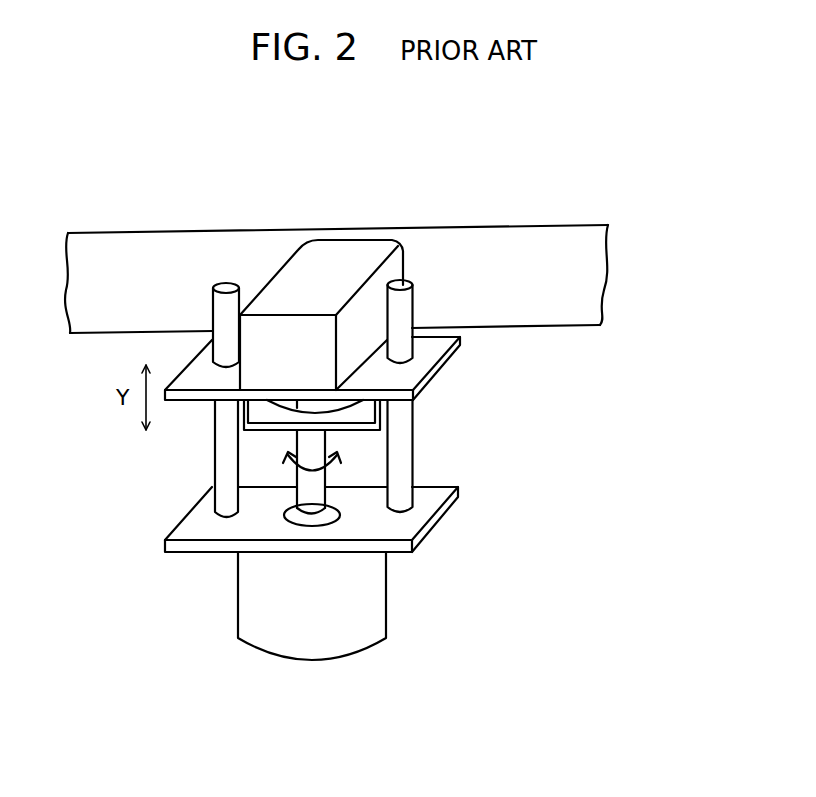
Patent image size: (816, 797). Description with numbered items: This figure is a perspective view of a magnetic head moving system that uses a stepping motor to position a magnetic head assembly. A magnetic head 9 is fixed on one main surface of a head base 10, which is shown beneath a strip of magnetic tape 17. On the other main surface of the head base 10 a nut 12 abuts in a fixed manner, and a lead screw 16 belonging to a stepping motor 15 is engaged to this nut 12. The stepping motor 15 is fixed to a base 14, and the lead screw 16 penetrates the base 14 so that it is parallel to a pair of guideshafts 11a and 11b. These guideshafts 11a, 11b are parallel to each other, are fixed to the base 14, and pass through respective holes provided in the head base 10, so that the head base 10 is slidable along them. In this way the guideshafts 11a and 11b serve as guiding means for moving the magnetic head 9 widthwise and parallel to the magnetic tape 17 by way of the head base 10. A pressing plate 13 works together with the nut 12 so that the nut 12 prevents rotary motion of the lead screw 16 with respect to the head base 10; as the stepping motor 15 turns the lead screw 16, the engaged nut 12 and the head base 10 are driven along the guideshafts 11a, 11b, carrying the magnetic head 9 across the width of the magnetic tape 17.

The magnetic head 9 is at (340, 252).
The head base 10 is at (425, 358).
The guideshaft 11a is at (413, 288).
The guideshaft 11b is at (213, 306).
The nut 12 is at (278, 402).
The pressing plate 13 is at (363, 415).
The base 14 is at (430, 490).
The stepping motor 15 is at (367, 608).
The lead screw 16 is at (300, 460).
The magnetic tape 17 is at (580, 268).